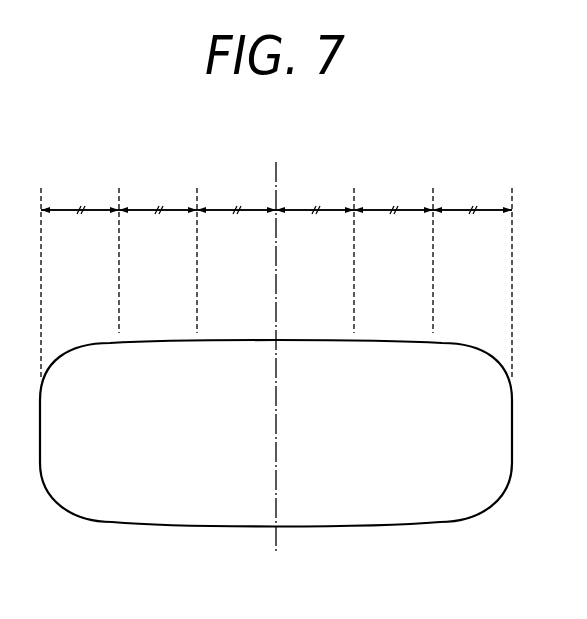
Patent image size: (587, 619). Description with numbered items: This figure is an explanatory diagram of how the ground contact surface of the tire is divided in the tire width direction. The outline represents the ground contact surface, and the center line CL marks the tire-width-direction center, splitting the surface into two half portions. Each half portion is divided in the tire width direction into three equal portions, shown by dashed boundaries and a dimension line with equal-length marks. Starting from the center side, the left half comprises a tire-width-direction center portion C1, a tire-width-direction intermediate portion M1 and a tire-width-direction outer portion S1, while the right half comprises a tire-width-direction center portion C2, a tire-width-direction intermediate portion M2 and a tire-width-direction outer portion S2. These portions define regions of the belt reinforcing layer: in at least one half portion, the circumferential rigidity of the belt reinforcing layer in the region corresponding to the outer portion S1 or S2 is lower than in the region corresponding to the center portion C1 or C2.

The tire-width-direction center CL is at (275, 345).
The tire-width-direction outer portion S1 is at (80, 194).
The tire-width-direction intermediate portion M1 is at (158, 194).
The tire-width-direction center portion C1 is at (236, 194).
The tire-width-direction center portion C2 is at (315, 194).
The tire-width-direction intermediate portion M2 is at (393, 194).
The tire-width-direction outer portion S2 is at (472, 194).